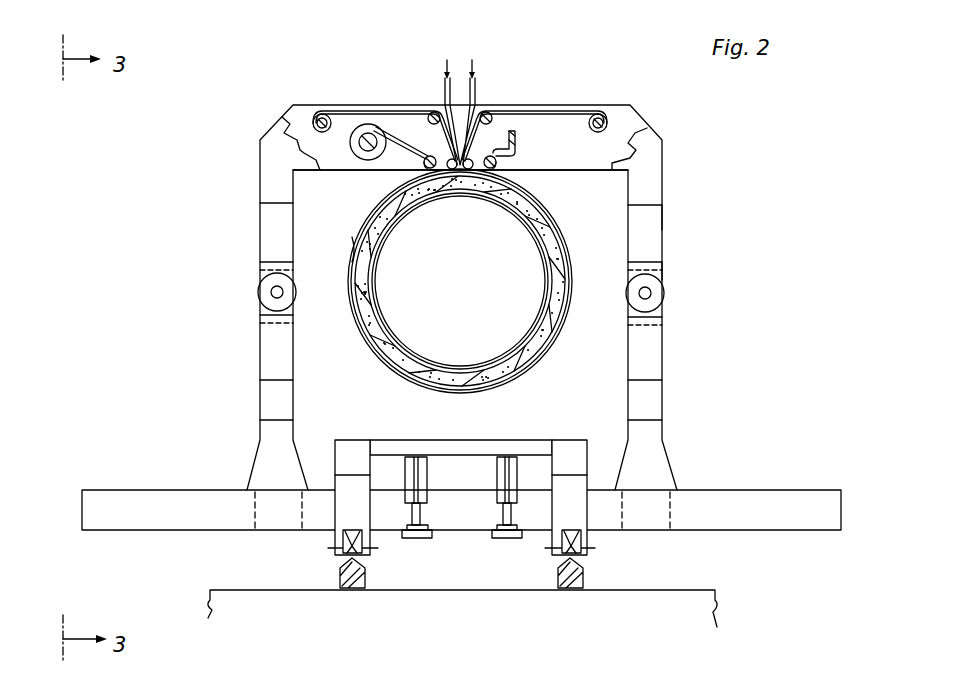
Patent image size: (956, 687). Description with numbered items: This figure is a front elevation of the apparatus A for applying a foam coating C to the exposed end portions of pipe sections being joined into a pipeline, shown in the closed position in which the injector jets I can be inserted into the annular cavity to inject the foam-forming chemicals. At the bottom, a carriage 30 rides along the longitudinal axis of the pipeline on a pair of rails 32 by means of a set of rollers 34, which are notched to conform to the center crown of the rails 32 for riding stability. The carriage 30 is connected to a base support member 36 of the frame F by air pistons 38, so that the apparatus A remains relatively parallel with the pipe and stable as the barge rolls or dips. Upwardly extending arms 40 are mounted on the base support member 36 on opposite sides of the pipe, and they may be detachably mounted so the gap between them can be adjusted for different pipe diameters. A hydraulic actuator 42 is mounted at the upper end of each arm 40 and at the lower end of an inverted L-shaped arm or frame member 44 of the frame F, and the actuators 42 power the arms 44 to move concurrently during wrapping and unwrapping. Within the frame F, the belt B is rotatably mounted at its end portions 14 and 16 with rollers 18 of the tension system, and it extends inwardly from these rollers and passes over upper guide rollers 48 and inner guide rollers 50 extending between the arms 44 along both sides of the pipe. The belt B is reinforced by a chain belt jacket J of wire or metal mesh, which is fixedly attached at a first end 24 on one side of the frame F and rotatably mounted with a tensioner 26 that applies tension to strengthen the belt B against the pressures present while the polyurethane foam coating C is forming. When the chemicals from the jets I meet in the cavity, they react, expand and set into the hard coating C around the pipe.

The end portion of the belt 14 is at (605, 120).
The end portion of the belt 16 is at (323, 110).
The rollers 18 is at (316, 117).
The first end of the jacket 24 is at (518, 143).
The tensioner 26 is at (348, 160).
The carriage 30 is at (337, 510).
The rails 32 is at (342, 580).
The rollers 34 is at (356, 557).
The base support member 36 is at (777, 497).
The air pistons 38 is at (505, 473).
The arms 40 is at (268, 355).
The hydraulic actuator 42 is at (262, 292).
The inverted L-shaped arm 44 is at (647, 183).
The upper guide rollers 48 is at (433, 112).
The inner guide rollers 50 is at (427, 158).
The injector jets I is at (480, 92).
The belt B is at (553, 110).
The frame F is at (668, 217).
The apparatus A is at (670, 271).
The chain belt jacket J is at (354, 237).
The coating C is at (388, 360).